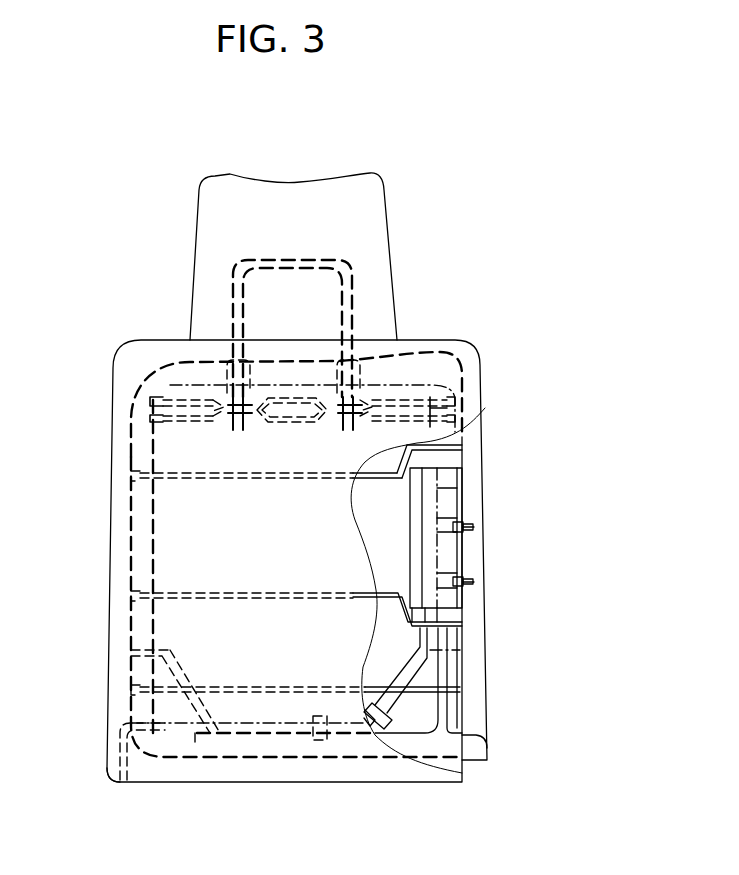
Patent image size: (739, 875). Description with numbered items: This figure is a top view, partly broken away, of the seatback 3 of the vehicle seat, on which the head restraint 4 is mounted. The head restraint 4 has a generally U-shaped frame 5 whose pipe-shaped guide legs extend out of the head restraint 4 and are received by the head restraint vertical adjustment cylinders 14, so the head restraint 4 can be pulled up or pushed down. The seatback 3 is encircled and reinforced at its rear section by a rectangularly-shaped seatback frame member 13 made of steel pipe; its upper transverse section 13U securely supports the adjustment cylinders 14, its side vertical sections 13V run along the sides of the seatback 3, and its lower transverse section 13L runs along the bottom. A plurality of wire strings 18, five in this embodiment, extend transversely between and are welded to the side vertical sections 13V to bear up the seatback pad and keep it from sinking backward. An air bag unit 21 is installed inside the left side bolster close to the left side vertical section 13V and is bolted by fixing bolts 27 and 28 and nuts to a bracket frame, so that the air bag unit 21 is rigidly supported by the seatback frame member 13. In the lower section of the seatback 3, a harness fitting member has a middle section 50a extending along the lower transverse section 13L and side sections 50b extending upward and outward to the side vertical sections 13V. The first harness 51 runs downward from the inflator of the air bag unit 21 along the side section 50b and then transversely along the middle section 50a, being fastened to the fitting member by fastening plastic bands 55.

The seatback 3 is at (150, 782).
The head restraint 4 is at (386, 206).
The U-shaped frame 5 is at (354, 293).
The seatback frame member 13 is at (297, 593).
The upper transverse section 13U is at (478, 352).
The lower transverse section 13L is at (257, 745).
The side vertical section 13V is at (440, 707).
The head restraint vertical adjustment cylinders 14 is at (210, 357).
The wire strings 18 is at (150, 399).
The air bag unit 21 is at (447, 482).
The fixing bolt 27 is at (468, 530).
The fixing bolt 28 is at (468, 527).
The middle section of harness fitting member 50a is at (337, 735).
The side section of harness fitting member 50b is at (425, 660).
The first harness 51 is at (195, 745).
The fastening plastic bands 55 is at (318, 748).